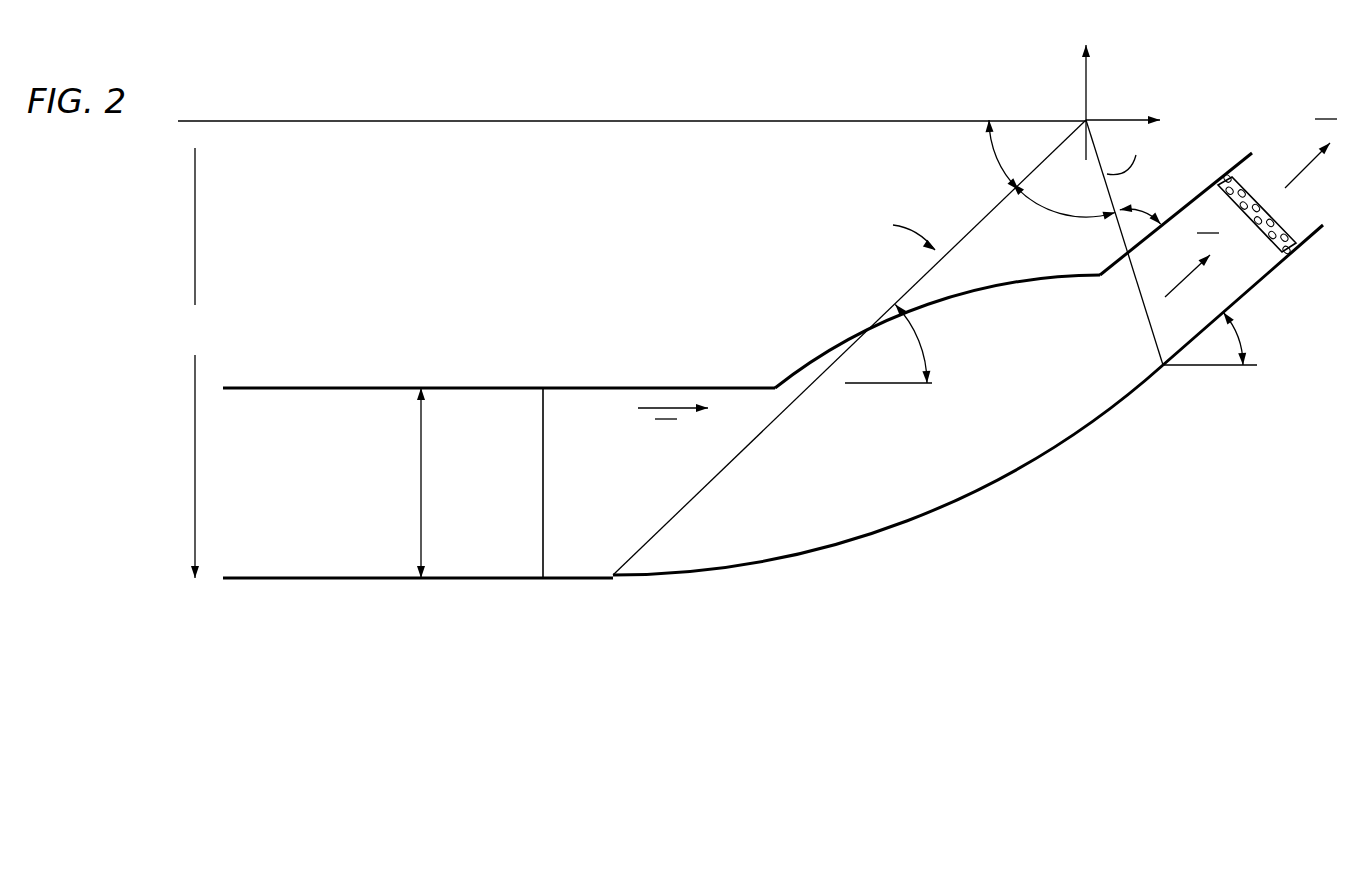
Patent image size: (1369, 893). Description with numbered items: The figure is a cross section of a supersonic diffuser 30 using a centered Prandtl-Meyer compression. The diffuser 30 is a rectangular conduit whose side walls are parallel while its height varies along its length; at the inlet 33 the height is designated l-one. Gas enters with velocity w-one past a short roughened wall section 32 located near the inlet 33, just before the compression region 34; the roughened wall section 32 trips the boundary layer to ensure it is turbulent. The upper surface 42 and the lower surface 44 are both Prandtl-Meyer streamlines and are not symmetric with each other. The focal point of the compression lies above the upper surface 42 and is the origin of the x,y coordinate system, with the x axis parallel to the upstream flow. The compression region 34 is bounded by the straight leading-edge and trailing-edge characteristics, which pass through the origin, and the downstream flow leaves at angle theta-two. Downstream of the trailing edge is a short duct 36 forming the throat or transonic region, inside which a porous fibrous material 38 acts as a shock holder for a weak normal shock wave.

The diffuser 30 is at (797, 205).
The roughened wall section 32 is at (596, 497).
The inlet 33 is at (543, 385).
The compression region 34 is at (929, 449).
The duct 36 is at (1272, 284).
The porous fibrous material 38 is at (1290, 231).
The upper surface 42 is at (383, 385).
The surface 44 is at (375, 583).